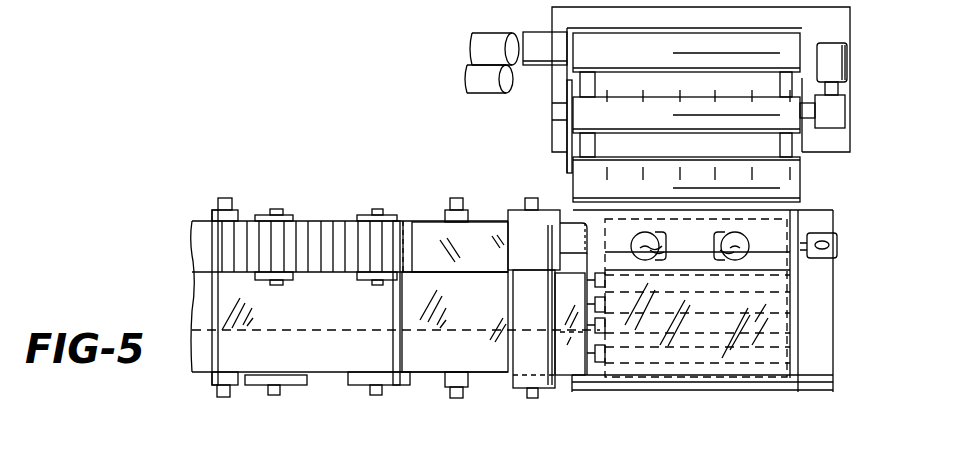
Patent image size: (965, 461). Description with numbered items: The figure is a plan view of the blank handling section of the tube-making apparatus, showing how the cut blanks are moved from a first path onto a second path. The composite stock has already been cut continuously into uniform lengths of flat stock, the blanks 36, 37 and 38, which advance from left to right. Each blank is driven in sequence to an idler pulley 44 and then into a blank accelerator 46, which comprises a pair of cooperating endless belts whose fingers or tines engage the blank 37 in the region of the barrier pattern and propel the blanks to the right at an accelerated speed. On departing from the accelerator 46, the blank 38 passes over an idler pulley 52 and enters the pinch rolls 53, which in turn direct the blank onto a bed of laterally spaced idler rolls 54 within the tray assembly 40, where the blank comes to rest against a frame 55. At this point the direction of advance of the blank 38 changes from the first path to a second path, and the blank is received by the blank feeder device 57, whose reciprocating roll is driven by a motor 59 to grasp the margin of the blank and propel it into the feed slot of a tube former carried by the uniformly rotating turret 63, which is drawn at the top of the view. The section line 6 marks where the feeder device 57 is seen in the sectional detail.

The section line 6- 6 is at (913, 338).
The blank 36 is at (190, 270).
The blank 37 is at (320, 360).
The blank 38 is at (482, 367).
The tray assembly 40 is at (767, 263).
The idler pulley 44 is at (223, 198).
The blank accelerator 46 is at (312, 213).
The idler pulley 52 is at (457, 377).
The pinch rolls 53 is at (537, 392).
The idler rolls 54 is at (670, 352).
The frame 55 is at (793, 333).
The blank feeder device 57 is at (887, 215).
The motor 59 is at (835, 247).
The turret 63 is at (530, 120).